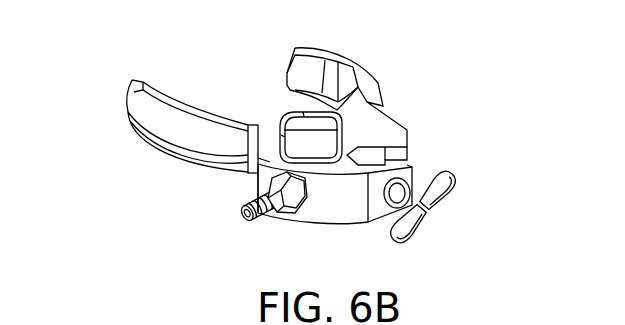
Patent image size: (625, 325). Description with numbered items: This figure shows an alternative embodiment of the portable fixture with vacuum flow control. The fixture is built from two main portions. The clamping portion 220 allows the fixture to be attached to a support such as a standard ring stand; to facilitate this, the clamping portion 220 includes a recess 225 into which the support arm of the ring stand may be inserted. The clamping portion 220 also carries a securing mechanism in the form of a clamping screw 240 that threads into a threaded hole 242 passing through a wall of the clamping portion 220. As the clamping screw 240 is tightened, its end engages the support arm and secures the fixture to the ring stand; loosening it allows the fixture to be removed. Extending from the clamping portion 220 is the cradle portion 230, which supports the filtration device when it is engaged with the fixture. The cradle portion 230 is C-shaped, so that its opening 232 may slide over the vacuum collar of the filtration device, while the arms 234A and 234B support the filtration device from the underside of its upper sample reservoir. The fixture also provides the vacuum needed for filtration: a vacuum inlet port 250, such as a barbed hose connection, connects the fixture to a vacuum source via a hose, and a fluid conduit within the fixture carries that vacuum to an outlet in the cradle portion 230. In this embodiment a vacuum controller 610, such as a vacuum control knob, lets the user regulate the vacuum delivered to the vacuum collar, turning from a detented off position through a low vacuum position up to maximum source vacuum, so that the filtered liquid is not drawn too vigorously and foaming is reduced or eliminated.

The clamping portion 220 is at (403, 135).
The recess 225 is at (407, 151).
The cradle portion 230 is at (363, 82).
The opening 232 is at (162, 124).
The arm 234A is at (346, 57).
The arm 234B is at (142, 118).
The vacuum controller 610 is at (300, 125).
The threaded hole 242 is at (389, 206).
The clamping screw 240 is at (428, 210).
The vacuum inlet port 250 is at (243, 225).